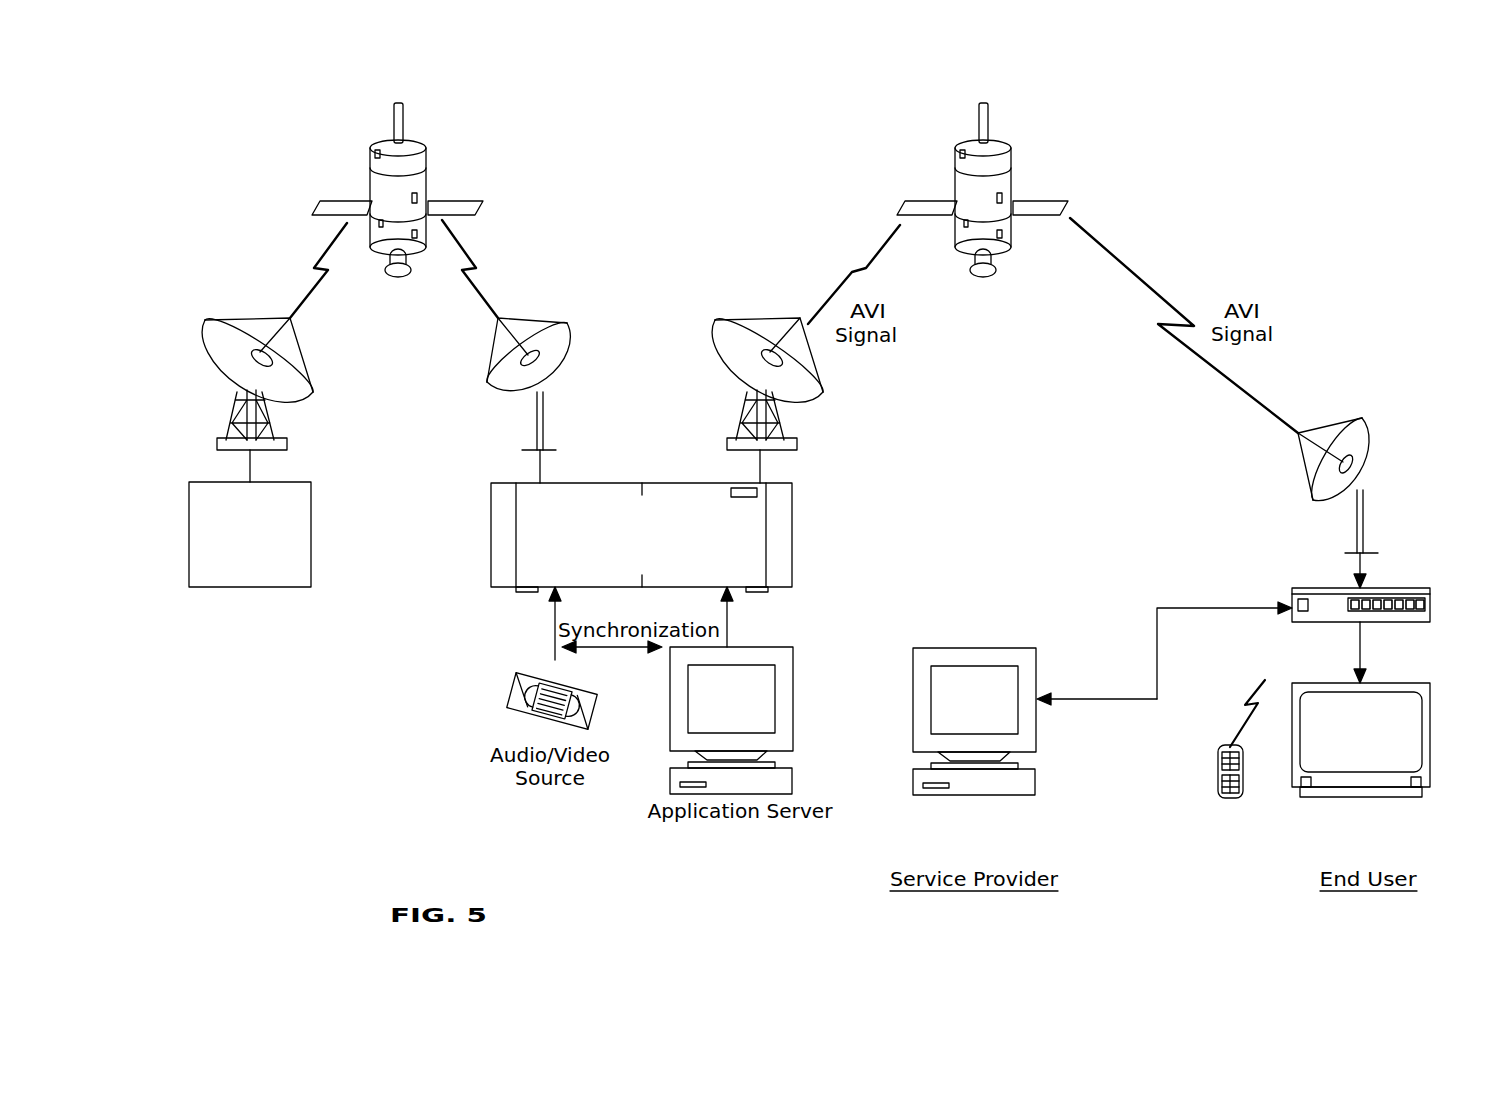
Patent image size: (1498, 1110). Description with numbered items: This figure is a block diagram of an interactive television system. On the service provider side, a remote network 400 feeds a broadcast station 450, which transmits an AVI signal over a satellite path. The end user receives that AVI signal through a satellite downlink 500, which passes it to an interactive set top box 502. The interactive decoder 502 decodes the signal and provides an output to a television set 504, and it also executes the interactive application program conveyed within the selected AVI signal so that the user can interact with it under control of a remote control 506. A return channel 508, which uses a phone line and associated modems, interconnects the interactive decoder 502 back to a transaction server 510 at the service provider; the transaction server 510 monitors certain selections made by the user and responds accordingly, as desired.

The remote network 400 is at (334, 476).
The broadcast station 450 is at (592, 476).
The satellite downlink 500 is at (1310, 502).
The interactive set top box 502 is at (1433, 608).
The television set 504 is at (1342, 760).
The remote control 506 is at (1217, 772).
The return channel 508 is at (1182, 603).
The transaction server 510 is at (954, 713).